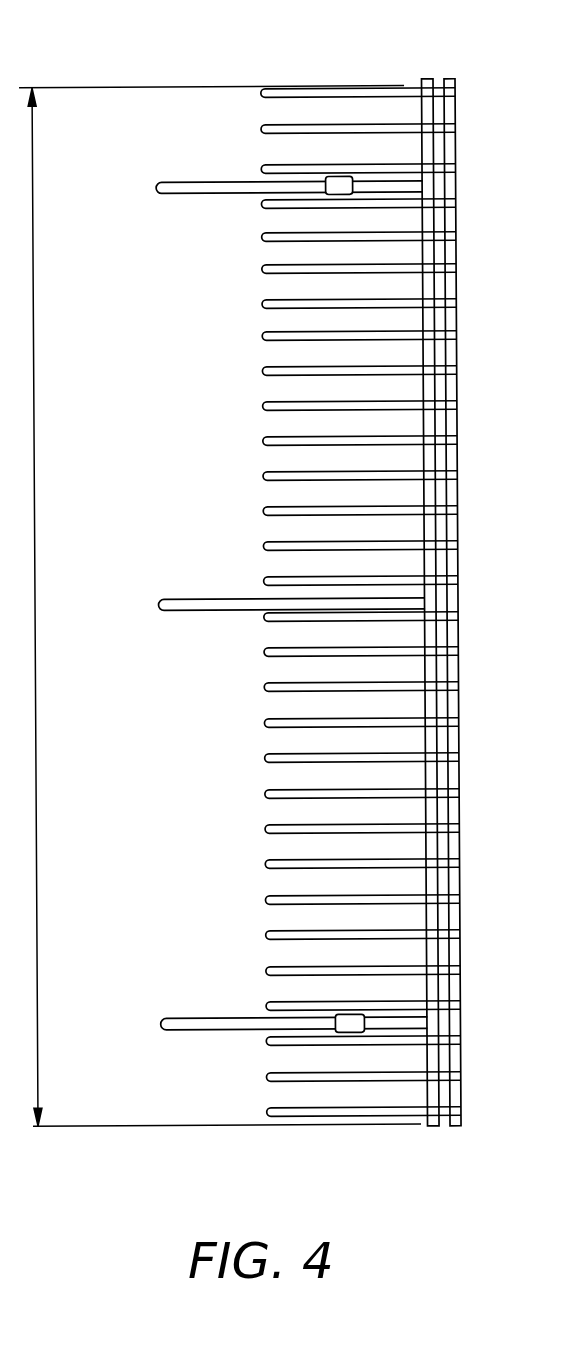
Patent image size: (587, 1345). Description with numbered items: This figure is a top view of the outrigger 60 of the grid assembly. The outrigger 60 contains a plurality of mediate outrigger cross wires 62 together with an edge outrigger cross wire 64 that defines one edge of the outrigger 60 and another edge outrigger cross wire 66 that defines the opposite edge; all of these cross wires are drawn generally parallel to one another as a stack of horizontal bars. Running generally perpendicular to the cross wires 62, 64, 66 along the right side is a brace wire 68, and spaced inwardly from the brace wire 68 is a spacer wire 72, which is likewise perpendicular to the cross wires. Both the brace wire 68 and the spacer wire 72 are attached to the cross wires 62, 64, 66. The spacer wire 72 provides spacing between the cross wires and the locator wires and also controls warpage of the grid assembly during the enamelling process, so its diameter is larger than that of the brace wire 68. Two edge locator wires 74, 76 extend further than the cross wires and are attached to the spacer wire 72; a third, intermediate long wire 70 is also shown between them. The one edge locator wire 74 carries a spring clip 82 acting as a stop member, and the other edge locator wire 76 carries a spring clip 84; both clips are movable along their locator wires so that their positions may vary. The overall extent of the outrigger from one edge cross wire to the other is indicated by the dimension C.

The outrigger 60 is at (368, 83).
The mediate outrigger cross wire 62 is at (277, 333).
The edge outrigger cross wire 64 is at (320, 1117).
The edge outrigger cross wire 66 is at (288, 88).
The brace wire 68 is at (453, 384).
The extended fin 70 is at (205, 600).
The spacer wire 72 is at (430, 529).
The edge locator wire 74 is at (192, 1032).
The edge locator wire 76 is at (200, 183).
The spring clip 82 is at (350, 1027).
The spring clip 84 is at (342, 177).
The overall length dimension C is at (220, 605).